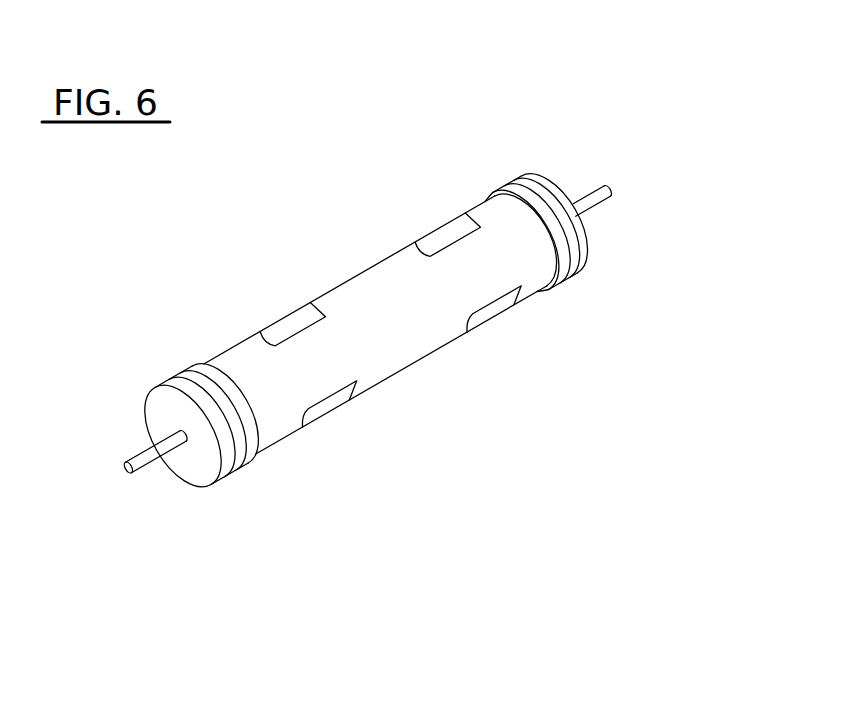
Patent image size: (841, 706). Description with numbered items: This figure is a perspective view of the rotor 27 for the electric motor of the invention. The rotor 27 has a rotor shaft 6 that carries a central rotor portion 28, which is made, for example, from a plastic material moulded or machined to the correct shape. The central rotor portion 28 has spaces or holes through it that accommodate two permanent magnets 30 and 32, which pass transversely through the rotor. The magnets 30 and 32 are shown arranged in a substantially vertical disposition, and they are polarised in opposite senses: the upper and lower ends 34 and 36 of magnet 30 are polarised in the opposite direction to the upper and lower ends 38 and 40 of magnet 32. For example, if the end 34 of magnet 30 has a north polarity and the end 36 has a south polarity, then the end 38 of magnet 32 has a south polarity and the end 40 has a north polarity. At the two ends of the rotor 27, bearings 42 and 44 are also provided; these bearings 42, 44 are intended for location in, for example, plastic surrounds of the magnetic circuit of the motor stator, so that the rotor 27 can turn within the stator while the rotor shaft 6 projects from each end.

The rotor shaft 6 is at (156, 460).
The rotor 27 is at (410, 383).
The central rotor portion 28 is at (365, 272).
The permanent magnet 30 is at (285, 312).
The permanent magnet 32 is at (455, 212).
The upper end of magnet 30 34 is at (262, 325).
The lower end of magnet 30 36 is at (320, 417).
The upper end of magnet 32 38 is at (434, 229).
The lower end of magnet 32 40 is at (477, 323).
The bearing 42 is at (151, 370).
The bearing 44 is at (515, 145).